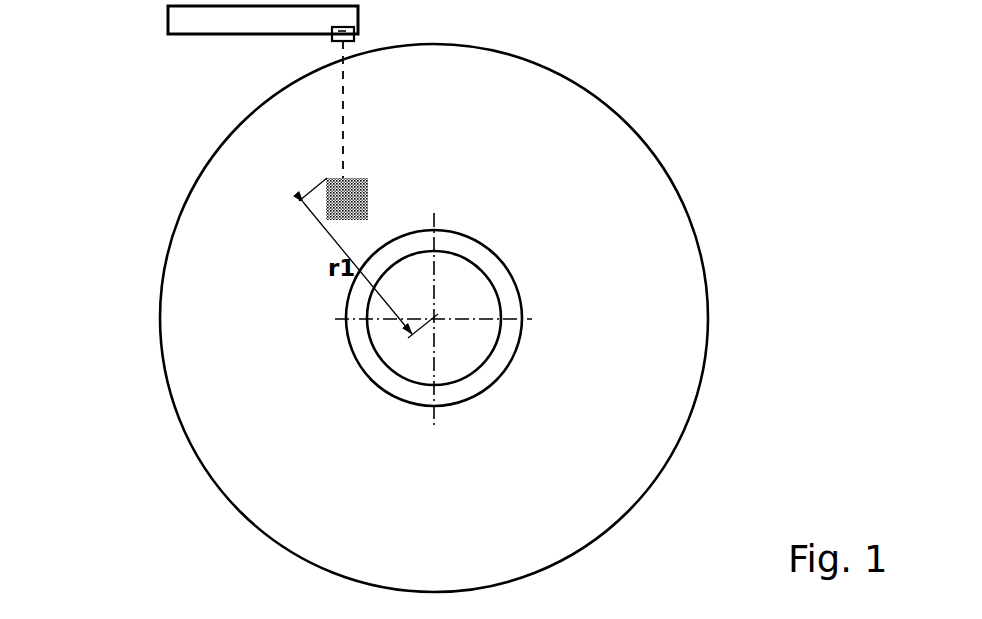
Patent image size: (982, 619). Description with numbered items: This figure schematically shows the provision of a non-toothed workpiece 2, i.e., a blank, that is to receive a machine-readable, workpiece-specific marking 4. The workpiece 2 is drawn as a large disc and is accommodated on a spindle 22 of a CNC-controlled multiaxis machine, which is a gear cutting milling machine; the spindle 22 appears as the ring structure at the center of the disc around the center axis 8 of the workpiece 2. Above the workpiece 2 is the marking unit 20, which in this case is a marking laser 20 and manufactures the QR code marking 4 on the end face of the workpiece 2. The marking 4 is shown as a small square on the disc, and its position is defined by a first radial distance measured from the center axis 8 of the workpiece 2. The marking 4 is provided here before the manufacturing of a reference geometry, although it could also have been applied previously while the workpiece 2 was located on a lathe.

The workpiece 2 is at (97, 73).
The marking unit 20 is at (354, 30).
The marking 4 is at (366, 197).
The center axis 8 is at (434, 318).
The spindle 22 is at (502, 307).